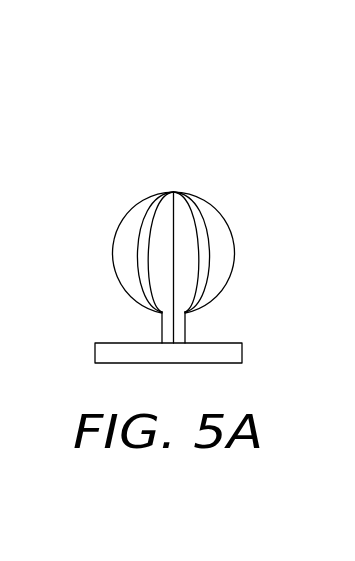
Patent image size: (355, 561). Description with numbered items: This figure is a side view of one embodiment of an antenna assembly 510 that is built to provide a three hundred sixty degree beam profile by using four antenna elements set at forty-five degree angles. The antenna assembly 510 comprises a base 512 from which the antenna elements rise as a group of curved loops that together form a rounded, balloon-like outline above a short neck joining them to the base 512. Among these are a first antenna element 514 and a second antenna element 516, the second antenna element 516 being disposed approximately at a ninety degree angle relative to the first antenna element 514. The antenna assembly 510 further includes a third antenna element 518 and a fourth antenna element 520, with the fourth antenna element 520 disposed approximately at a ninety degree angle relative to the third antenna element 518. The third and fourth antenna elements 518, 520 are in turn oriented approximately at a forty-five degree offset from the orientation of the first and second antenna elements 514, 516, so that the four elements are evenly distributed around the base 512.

The antenna assembly 510 is at (193, 157).
The base 512 is at (242, 352).
The first antenna element 514 is at (113, 249).
The second antenna element 516 is at (162, 195).
The third antenna element 518 is at (138, 232).
The fourth antenna element 520 is at (193, 213).